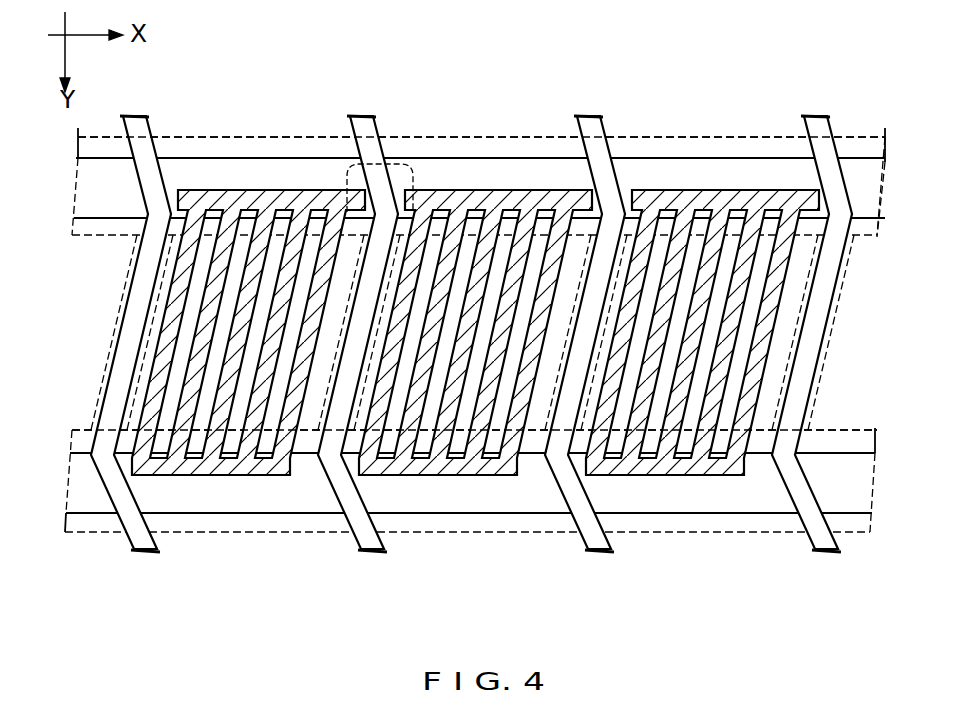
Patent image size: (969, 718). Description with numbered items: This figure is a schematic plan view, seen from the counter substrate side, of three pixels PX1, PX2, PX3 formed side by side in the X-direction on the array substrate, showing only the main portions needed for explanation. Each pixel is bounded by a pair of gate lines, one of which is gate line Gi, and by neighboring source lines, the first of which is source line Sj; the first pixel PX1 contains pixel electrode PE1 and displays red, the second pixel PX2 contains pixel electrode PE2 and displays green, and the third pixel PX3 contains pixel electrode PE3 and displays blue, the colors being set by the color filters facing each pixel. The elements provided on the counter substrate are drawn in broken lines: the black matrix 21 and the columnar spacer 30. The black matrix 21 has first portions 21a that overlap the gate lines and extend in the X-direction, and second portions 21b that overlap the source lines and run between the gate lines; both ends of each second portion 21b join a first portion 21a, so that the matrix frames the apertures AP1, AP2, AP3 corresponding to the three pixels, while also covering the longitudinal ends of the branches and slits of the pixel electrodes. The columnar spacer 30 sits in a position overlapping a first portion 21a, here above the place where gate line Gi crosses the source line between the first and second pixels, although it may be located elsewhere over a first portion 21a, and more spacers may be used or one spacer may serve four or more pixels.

The gate line Gi is at (105, 157).
The source line Sj is at (137, 500).
The pixel electrode PE1 is at (237, 477).
The pixel electrode PE2 is at (464, 477).
The pixel electrode PE3 is at (699, 477).
The aperture AP1 is at (312, 407).
The aperture AP2 is at (539, 407).
The aperture AP3 is at (766, 407).
The pixel PX1 is at (355, 108).
The pixel PX2 is at (587, 108).
The pixel PX3 is at (817, 108).
The columnar spacer 30 is at (398, 160).
The black matrix 21 is at (843, 125).
The first portion 21a is at (855, 135).
The second portion 21b is at (355, 325).